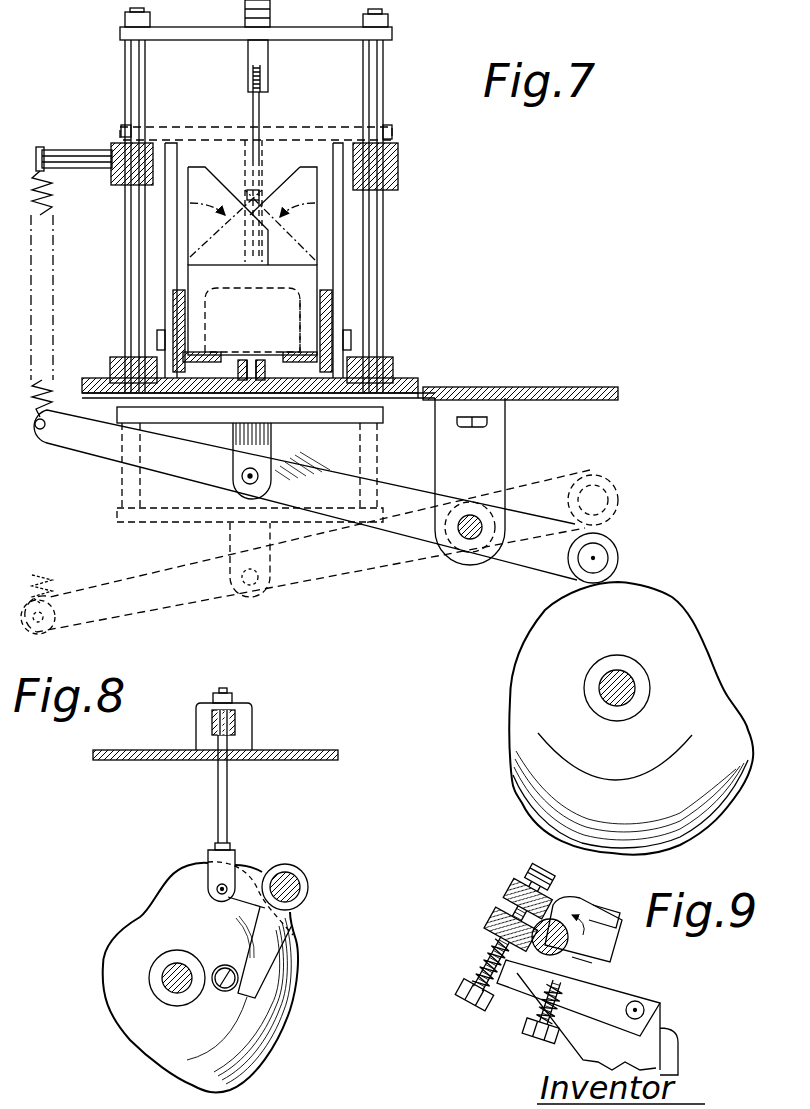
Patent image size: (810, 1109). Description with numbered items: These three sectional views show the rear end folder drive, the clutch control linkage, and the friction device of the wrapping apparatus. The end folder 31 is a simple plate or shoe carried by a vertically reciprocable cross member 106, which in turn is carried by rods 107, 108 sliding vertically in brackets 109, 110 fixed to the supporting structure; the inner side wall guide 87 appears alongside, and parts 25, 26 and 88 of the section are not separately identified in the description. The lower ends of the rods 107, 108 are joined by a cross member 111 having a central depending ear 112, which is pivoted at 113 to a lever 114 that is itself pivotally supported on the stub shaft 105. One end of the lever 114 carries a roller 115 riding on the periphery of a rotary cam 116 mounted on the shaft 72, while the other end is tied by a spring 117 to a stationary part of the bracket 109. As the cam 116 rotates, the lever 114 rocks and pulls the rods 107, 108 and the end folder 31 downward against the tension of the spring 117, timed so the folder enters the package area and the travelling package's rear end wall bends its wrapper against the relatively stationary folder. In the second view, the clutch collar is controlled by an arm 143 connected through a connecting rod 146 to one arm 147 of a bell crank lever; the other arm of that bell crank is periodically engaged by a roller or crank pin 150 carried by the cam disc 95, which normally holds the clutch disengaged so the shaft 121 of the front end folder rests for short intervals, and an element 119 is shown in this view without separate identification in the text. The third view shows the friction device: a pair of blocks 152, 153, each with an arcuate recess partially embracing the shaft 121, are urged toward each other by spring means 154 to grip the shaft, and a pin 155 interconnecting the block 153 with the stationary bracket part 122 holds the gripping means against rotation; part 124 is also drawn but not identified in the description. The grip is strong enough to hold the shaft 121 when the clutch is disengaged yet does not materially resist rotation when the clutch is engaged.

In FIG. 7, the cross member 106 is at (318, 40).
In FIG. 7, the rod 107 is at (133, 87).
In FIG. 7, the rod 108 is at (383, 77).
In FIG. 7, the end folder 31 is at (262, 113).
In FIG. 7, the V-shaped guide block 26 is at (308, 175).
In FIG. 7, the bracket 109 is at (170, 236).
In FIG. 7, the bracket 110 is at (340, 234).
In FIG. 7, the lower housing 25 is at (318, 284).
In FIG. 7, the chamber 88 is at (185, 314).
In FIG. 7, the inner side wall guide 87 is at (320, 320).
In FIG. 7, the spring 117 is at (55, 200).
In FIG. 7, the ear 112 is at (235, 432).
In FIG. 7, the cross member 111 is at (318, 409).
In FIG. 7, the pivot 113 is at (243, 483).
In FIG. 7, the lever 114 is at (92, 446).
In FIG. 7, the stub shaft 105 is at (468, 540).
In FIG. 7, the roller 115 is at (616, 551).
In FIG. 7, the rotary cam 116 is at (530, 740).
In FIG. 7, the shaft 72 is at (665, 652).
In FIG. 8, the shaft 72 is at (180, 960).
In FIG. 8, the arm 143 is at (236, 720).
In FIG. 8, the connecting rod 146 is at (228, 787).
In FIG. 8, the arm of bell crank lever 147 is at (247, 868).
In FIG. 8, the cam lever 119 is at (278, 931).
In FIG. 8, the cam disc 95 is at (298, 979).
In FIG. 8, the crank pin 150 is at (225, 991).
In FIG. 9, the friction block 152 is at (517, 884).
In FIG. 9, the friction block 153 is at (490, 922).
In FIG. 9, the spring means 154 is at (478, 966).
In FIG. 9, the shaft 121 is at (560, 917).
In FIG. 9, the stationary bracket part 122 is at (633, 973).
In FIG. 9, the pin 155 is at (646, 1010).
In FIG. 9, the adjusting bolt 124 is at (528, 1012).